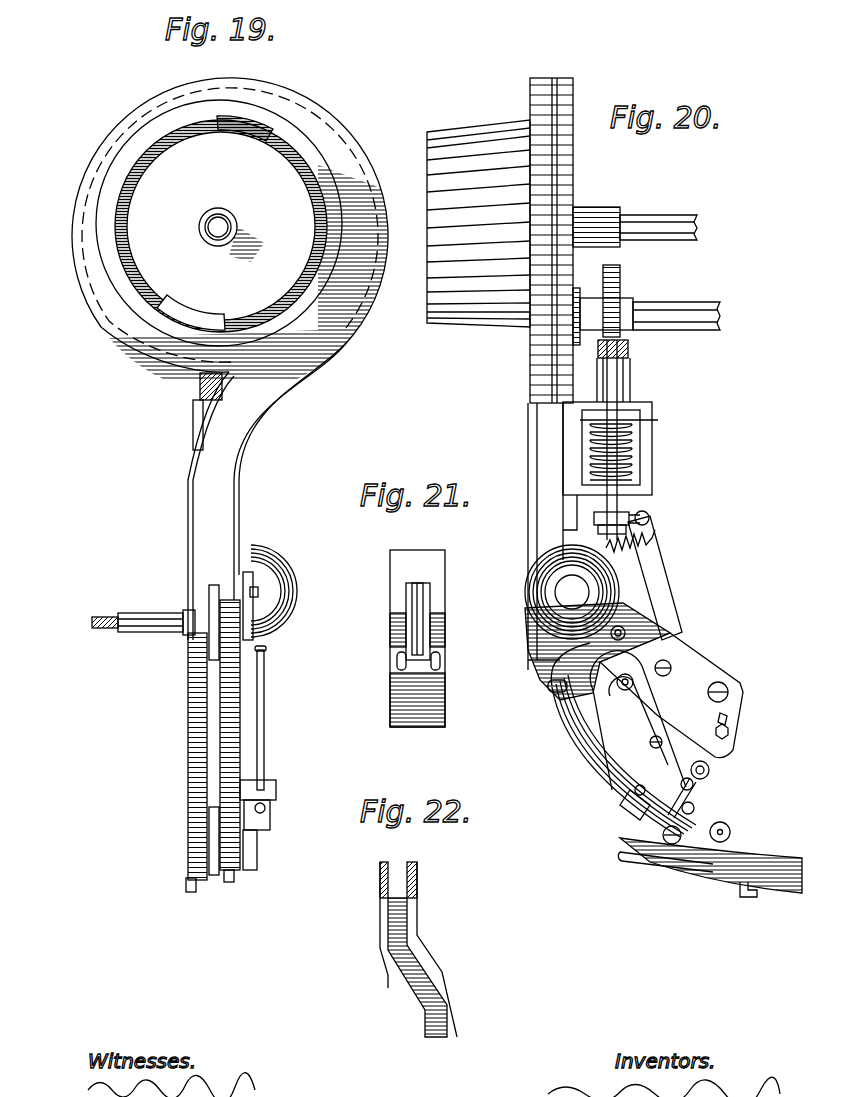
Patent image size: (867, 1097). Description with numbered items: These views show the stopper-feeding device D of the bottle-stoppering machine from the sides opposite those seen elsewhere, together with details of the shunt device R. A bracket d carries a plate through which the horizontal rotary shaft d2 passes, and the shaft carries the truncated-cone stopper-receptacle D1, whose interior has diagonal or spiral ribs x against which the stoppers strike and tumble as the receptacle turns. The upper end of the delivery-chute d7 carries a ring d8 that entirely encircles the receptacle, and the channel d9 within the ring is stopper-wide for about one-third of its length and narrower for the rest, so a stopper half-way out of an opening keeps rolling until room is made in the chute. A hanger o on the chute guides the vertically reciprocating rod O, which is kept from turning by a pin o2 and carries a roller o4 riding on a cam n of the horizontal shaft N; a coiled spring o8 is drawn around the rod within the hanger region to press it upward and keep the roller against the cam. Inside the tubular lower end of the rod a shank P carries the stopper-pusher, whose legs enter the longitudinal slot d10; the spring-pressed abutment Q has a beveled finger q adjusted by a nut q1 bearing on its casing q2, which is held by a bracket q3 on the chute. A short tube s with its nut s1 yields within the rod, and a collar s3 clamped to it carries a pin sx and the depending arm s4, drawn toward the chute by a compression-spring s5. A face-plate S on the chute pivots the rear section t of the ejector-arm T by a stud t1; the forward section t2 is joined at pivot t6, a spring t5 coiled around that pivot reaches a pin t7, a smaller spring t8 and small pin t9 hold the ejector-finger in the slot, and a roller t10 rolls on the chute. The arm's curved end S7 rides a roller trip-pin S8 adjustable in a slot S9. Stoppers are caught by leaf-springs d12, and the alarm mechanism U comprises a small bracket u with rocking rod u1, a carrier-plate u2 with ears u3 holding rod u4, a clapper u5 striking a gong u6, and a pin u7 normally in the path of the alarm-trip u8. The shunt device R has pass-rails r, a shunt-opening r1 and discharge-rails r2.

In FIG. 19, the ring d8 is at (336, 114).
In FIG. 19, the channel d9 is at (94, 163).
In FIG. 19, the stopper-receptacle D1 is at (128, 196).
In FIG. 20, the stopper-receptacle D1 is at (480, 120).
In FIG. 19, the horizontal rotary shaft d2 is at (233, 223).
In FIG. 20, the horizontal rotary shaft d2 is at (653, 213).
In FIG. 19, the diagonal or spiral ribs x is at (243, 146).
In FIG. 19, the stopper-feeding device D is at (126, 393).
In FIG. 20, the stopper-feeding device D is at (485, 385).
In FIG. 19, the rod O is at (198, 392).
In FIG. 20, the rod O is at (633, 379).
In FIG. 19, the delivery-chute d7 is at (241, 480).
In FIG. 20, the delivery-chute d7 is at (527, 448).
In FIG. 21, the delivery-chute d7 is at (430, 569).
In FIG. 22, the delivery-chute d7 is at (418, 879).
In FIG. 19, the spring-pressed abutment Q is at (143, 610).
In FIG. 19, the finger q is at (210, 613).
In FIG. 19, the nut q1 is at (122, 629).
In FIG. 19, the casing q2 is at (155, 629).
In FIG. 19, the bracket q3 is at (187, 640).
In FIG. 19, the pass-rails r is at (195, 682).
In FIG. 22, the pass-rails r is at (418, 972).
In FIG. 19, the face-plate S is at (250, 667).
In FIG. 20, the face-plate S is at (713, 662).
In FIG. 19, the clapper u5 is at (265, 668).
In FIG. 20, the clapper u5 is at (553, 667).
In FIG. 19, the gong u6 is at (298, 583).
In FIG. 20, the gong u6 is at (527, 600).
In FIG. 19, the alarm mechanism U is at (288, 745).
In FIG. 20, the alarm mechanism U is at (540, 750).
In FIG. 19, the rod u4 is at (270, 745).
In FIG. 20, the rod u4 is at (602, 750).
In FIG. 19, the ears u3 is at (273, 788).
In FIG. 20, the ears u3 is at (620, 798).
In FIG. 19, the longitudinal slot d10 is at (213, 758).
In FIG. 19, the leaf-springs d12 is at (203, 881).
In FIG. 20, the leaf-springs d12 is at (767, 890).
In FIG. 20, the bracket d is at (575, 178).
In FIG. 20, the cam n is at (621, 279).
In FIG. 20, the horizontal shaft N is at (684, 302).
In FIG. 20, the roller o4 is at (630, 346).
In FIG. 20, the pin o2 is at (660, 420).
In FIG. 20, the hanger o is at (653, 453).
In FIG. 20, the spring o8 is at (633, 462).
In FIG. 20, the short tube s is at (628, 503).
In FIG. 20, the collar s3 is at (590, 512).
In FIG. 20, the pin sx is at (594, 517).
In FIG. 20, the nut s1 is at (596, 525).
In FIG. 20, the shank P is at (626, 536).
In FIG. 20, the compression-spring s5 is at (655, 547).
In FIG. 20, the depending arm s4 is at (668, 571).
In FIG. 20, the shunt device R is at (583, 651).
In FIG. 21, the shunt device R is at (355, 628).
In FIG. 22, the shunt device R is at (324, 910).
In FIG. 20, the pivot t6 is at (617, 680).
In FIG. 20, the rear section of ejector-arm t is at (671, 672).
In FIG. 20, the stud t1 is at (728, 690).
In FIG. 20, the spring t5 is at (697, 688).
In FIG. 20, the pin t7 is at (660, 718).
In FIG. 20, the slot S9 is at (716, 716).
In FIG. 20, the curved end S7 is at (736, 723).
In FIG. 20, the roller trip-pin S8 is at (730, 738).
In FIG. 20, the ejector-arm T is at (638, 720).
In FIG. 20, the forward section of ejector-arm t2 is at (650, 742).
In FIG. 20, the alarm-trip u8 is at (710, 772).
In FIG. 20, the smaller spring t8 is at (707, 808).
In FIG. 20, the small pin t9 is at (728, 816).
In FIG. 20, the roller t10 is at (731, 833).
In FIG. 20, the carrier-plate u2 is at (632, 820).
In FIG. 20, the pin u7 is at (627, 858).
In FIG. 20, the rod u1 is at (655, 849).
In FIG. 20, the small bracket u is at (710, 864).
In FIG. 21, the shunt-opening r1 is at (425, 604).
In FIG. 22, the shunt-opening r1 is at (398, 974).
In FIG. 21, the discharge-rail r2 is at (440, 657).
In FIG. 22, the discharge-rail r2 is at (386, 970).